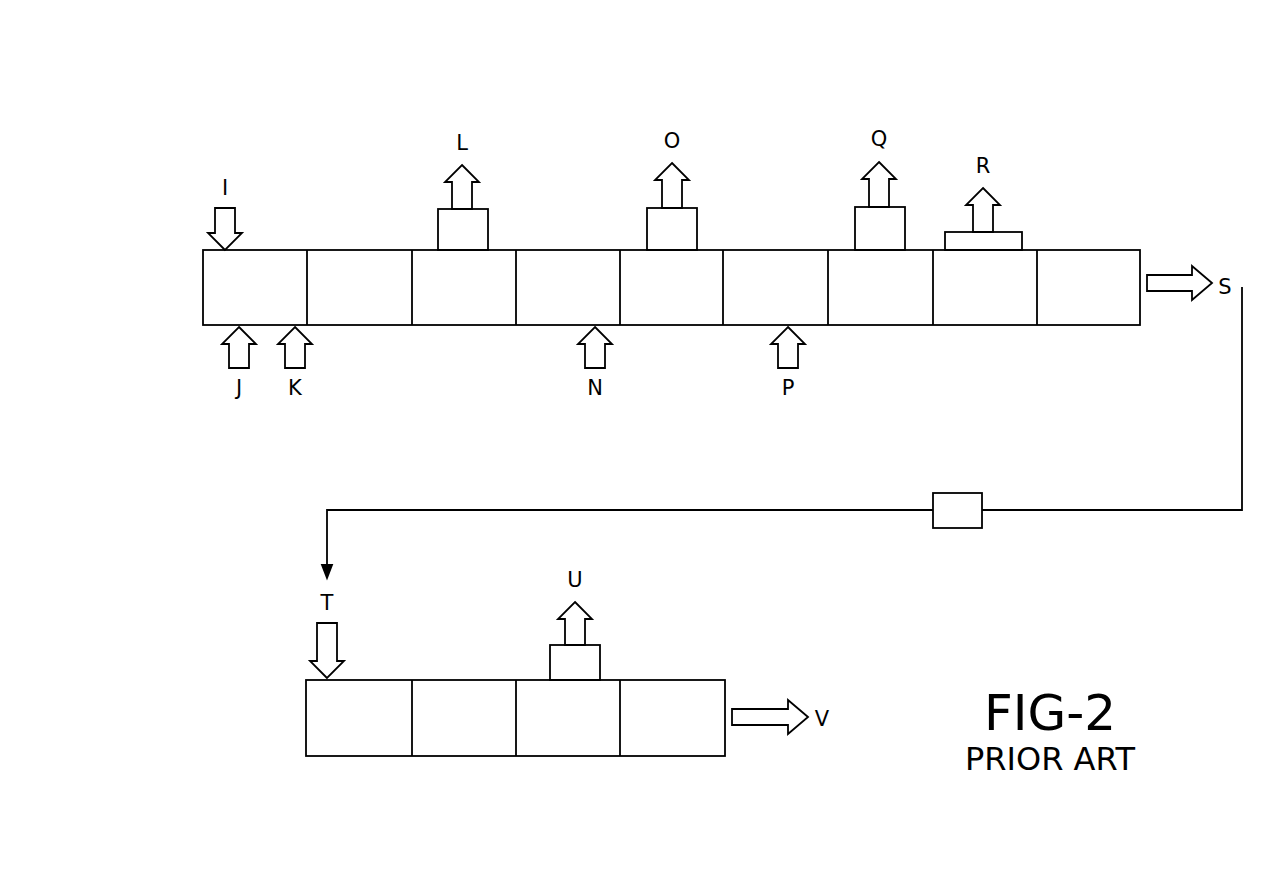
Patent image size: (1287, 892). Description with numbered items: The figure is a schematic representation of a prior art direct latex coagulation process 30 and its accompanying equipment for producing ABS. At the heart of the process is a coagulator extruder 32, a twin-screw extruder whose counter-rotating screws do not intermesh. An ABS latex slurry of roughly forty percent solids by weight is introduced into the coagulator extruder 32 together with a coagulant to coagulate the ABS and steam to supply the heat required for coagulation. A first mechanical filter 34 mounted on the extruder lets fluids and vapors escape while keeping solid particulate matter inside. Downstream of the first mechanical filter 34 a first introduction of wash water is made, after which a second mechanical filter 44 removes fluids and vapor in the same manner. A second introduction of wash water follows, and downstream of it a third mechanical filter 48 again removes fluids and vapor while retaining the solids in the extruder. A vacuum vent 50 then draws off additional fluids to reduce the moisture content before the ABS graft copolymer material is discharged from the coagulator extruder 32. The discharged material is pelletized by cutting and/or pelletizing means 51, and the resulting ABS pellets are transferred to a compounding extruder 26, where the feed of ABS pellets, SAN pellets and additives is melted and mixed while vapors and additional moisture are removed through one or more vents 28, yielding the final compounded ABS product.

The direct latex coagulation process 30 is at (1229, 142).
The coagulator extruder 32 is at (198, 291).
The first mechanical filter 34 is at (488, 240).
The second mechanical filter 44 is at (697, 238).
The third mechanical filter 48 is at (855, 238).
The vacuum vent 50 is at (1017, 228).
The cutting and/or pelletizing means 51 is at (957, 528).
The compounding extruder 26 is at (438, 760).
The vents 28 is at (600, 660).